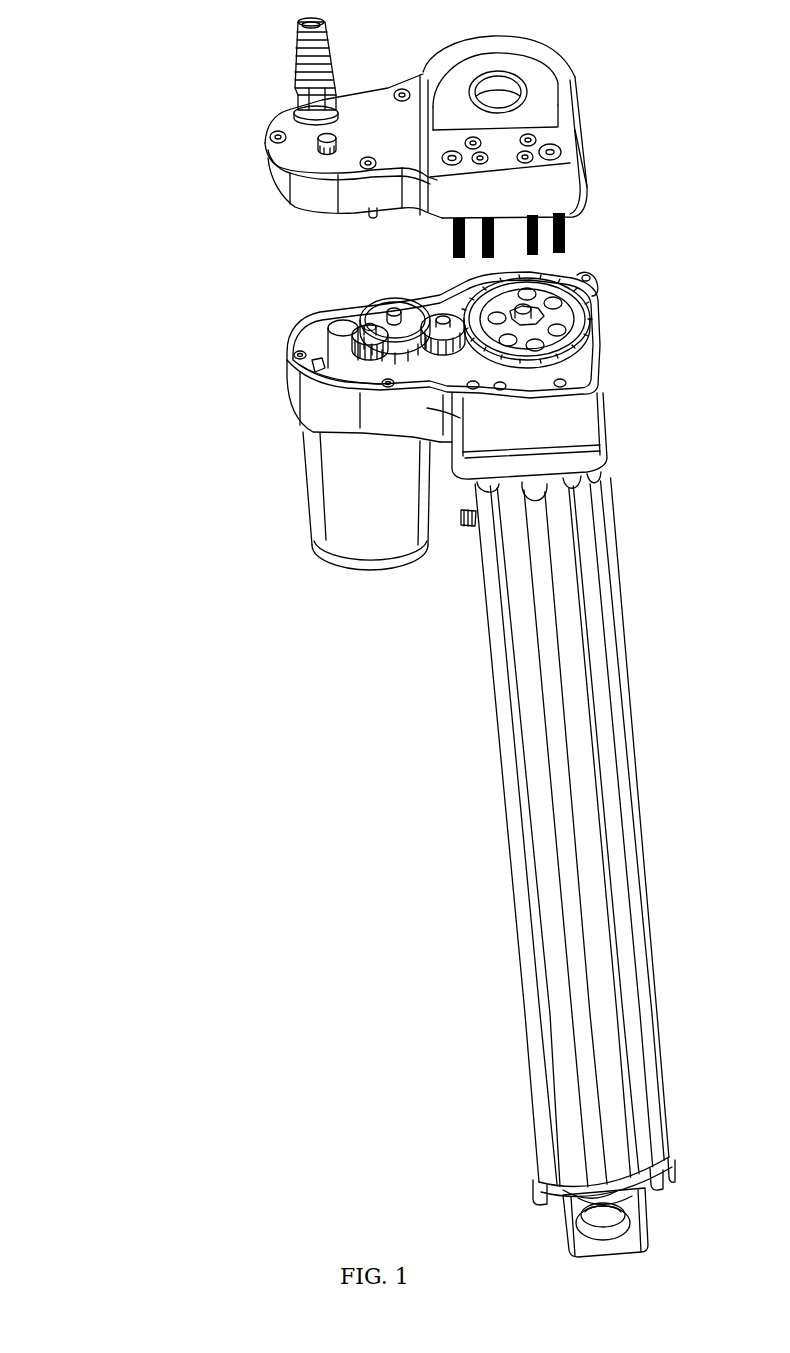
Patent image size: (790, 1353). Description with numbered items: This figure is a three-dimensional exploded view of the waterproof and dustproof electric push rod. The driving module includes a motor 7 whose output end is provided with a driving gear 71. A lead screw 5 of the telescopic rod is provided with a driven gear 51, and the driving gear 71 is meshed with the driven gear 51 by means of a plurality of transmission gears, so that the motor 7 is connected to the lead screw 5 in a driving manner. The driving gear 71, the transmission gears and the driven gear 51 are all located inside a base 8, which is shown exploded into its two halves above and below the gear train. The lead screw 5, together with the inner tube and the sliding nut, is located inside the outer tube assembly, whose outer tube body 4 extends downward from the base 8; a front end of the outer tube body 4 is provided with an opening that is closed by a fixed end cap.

The base 8 is at (357, 148).
The lead screw 5 is at (545, 292).
The driven gear 51 is at (588, 281).
The driving gear 71 is at (350, 340).
The motor 7 is at (355, 475).
The outer tube body 4 is at (620, 800).